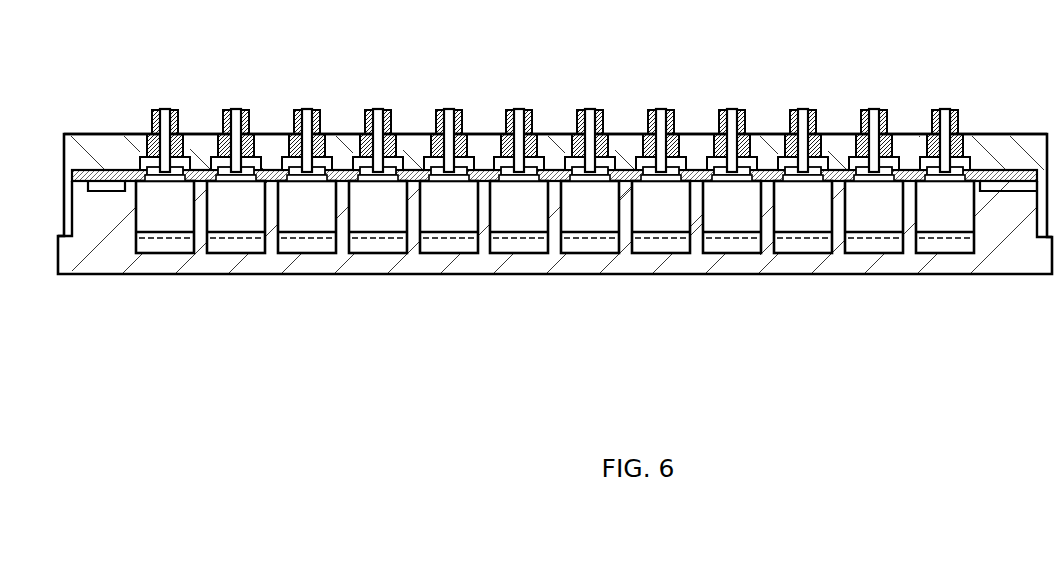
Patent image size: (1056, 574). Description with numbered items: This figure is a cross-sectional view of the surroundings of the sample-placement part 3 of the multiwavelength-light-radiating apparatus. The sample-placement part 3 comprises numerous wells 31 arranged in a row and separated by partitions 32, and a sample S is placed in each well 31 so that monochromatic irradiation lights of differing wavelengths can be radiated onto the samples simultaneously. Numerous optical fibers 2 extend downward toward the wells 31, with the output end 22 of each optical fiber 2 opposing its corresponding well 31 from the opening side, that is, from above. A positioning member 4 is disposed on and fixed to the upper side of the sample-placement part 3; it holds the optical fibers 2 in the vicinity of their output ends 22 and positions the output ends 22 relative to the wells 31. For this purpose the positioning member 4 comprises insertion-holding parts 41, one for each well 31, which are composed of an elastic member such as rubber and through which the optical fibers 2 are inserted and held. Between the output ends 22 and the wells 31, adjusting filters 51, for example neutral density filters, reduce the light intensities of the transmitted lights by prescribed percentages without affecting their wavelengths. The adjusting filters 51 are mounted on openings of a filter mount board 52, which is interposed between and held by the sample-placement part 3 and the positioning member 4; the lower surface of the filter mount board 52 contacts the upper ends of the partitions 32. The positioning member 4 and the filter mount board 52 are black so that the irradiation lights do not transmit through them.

The optical fiber 2 is at (233, 118).
The sample-placement part 3 is at (1003, 247).
The positioning member 4 is at (983, 150).
The output end 22 is at (211, 136).
The well 31 is at (377, 213).
The partition 32 is at (628, 213).
The insertion-holding part 41 is at (393, 138).
The adjusting filter 51 is at (253, 140).
The filter mount board 52 is at (556, 186).
The sample S is at (302, 245).